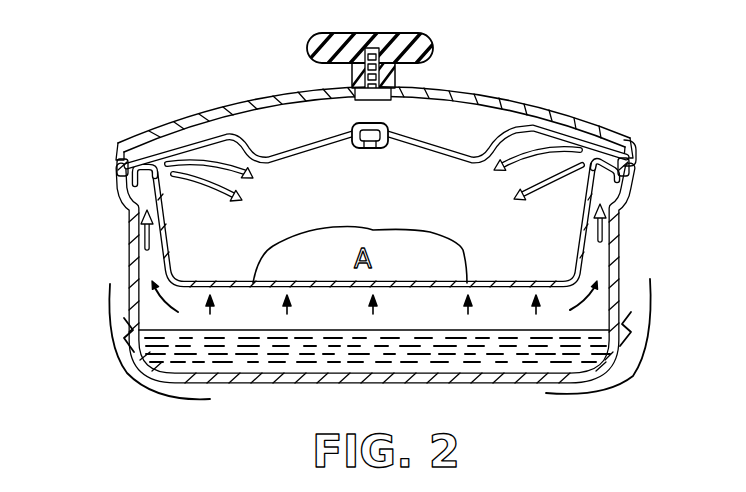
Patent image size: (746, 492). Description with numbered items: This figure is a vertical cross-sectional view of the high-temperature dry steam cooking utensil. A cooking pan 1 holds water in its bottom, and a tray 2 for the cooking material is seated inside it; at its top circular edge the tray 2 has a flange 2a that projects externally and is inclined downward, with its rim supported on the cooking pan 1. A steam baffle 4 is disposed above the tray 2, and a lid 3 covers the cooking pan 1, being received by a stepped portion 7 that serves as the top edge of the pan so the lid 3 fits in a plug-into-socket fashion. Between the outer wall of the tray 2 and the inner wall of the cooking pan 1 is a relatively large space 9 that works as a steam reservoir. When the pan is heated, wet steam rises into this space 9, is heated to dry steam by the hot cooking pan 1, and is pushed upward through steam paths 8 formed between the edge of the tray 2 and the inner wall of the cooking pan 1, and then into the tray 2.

The cooking pan 1 is at (628, 258).
The tray 2 is at (172, 266).
The flange 2a is at (134, 198).
The lid 3 is at (494, 88).
The steam baffle 4 is at (542, 122).
The stepped portion 7 is at (637, 158).
The steam paths 8 is at (118, 170).
The space 9 is at (608, 212).